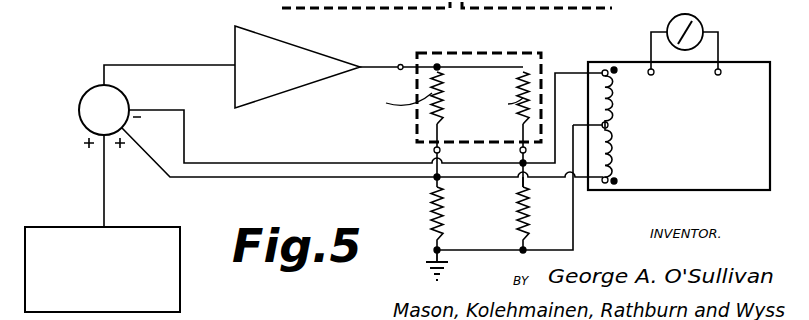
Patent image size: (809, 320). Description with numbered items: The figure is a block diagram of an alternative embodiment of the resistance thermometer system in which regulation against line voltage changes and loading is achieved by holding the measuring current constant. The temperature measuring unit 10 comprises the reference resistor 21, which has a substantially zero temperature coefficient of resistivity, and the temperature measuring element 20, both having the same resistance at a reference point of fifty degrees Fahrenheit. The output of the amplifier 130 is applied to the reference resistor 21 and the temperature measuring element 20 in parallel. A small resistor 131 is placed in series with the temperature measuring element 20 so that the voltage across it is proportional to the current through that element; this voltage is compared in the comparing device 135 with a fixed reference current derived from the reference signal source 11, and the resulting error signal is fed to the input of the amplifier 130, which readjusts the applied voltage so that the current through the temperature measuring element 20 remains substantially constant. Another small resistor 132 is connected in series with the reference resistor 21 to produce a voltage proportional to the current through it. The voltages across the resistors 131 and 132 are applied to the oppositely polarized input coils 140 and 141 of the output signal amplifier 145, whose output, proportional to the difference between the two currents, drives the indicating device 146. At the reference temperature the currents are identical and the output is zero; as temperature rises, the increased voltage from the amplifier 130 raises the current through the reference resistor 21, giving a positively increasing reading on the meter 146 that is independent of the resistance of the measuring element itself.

The temperature measuring unit 10 is at (514, 53).
The reference signal source 11 is at (180, 270).
The temperature measuring element 20 is at (523, 117).
The reference resistor 21 is at (437, 120).
The amplifier 130 is at (235, 51).
The resistor 131 is at (527, 212).
The resistor 132 is at (445, 213).
The comparing device 135 is at (127, 98).
The input coil 140 is at (615, 92).
The input coil 141 is at (617, 158).
The output signal amplifier 145 is at (740, 62).
The indicating device 146 is at (703, 24).